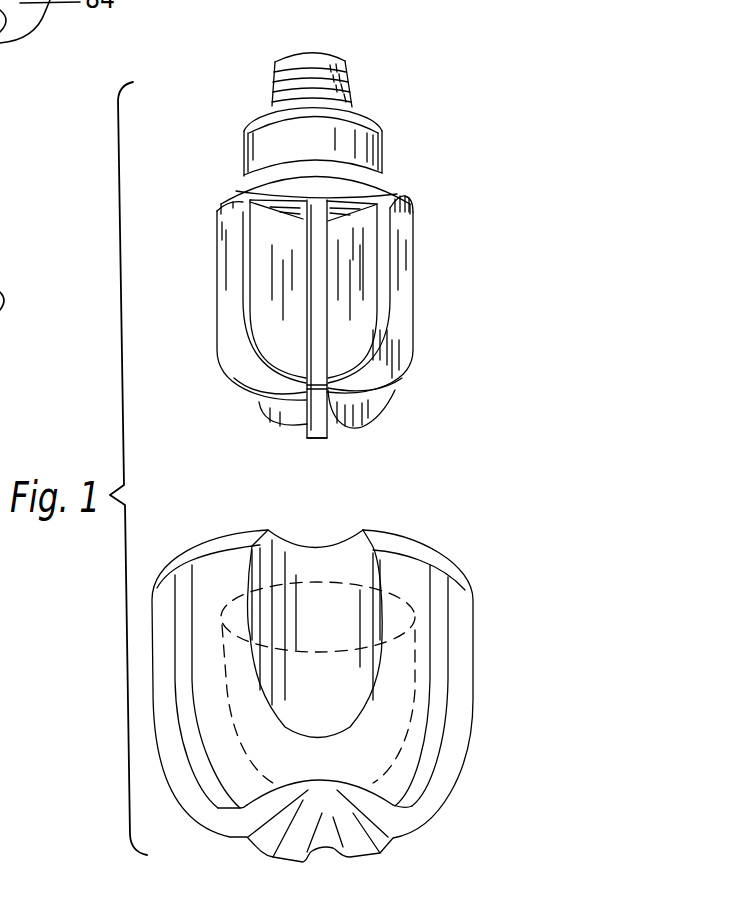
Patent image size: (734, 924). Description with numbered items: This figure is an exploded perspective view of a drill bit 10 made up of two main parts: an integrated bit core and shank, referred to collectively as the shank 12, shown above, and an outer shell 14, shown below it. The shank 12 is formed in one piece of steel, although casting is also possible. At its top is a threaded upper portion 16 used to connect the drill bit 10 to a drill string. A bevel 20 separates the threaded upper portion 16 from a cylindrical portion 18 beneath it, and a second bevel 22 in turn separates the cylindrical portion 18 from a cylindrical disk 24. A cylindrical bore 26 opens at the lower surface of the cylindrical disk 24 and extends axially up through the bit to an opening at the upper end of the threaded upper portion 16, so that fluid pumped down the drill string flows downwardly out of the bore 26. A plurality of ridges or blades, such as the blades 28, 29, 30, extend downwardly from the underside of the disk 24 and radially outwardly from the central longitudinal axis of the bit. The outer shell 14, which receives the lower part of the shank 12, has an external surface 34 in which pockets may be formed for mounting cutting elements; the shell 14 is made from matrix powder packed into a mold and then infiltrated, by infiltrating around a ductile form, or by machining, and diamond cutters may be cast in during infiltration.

The drill bit 10 is at (212, 368).
The shank 12 is at (392, 157).
The outer shell 14 is at (486, 620).
The threaded upper portion 16 is at (350, 90).
The cylindrical portion 18 is at (240, 150).
The bevel 20 is at (260, 112).
The bevel 22 is at (233, 187).
The cylindrical disk 24 is at (399, 197).
The cylindrical bore 26 is at (353, 218).
The blade 28 is at (370, 293).
The blade 29 is at (315, 330).
The blade 30 is at (322, 440).
The external surface 34 is at (385, 747).